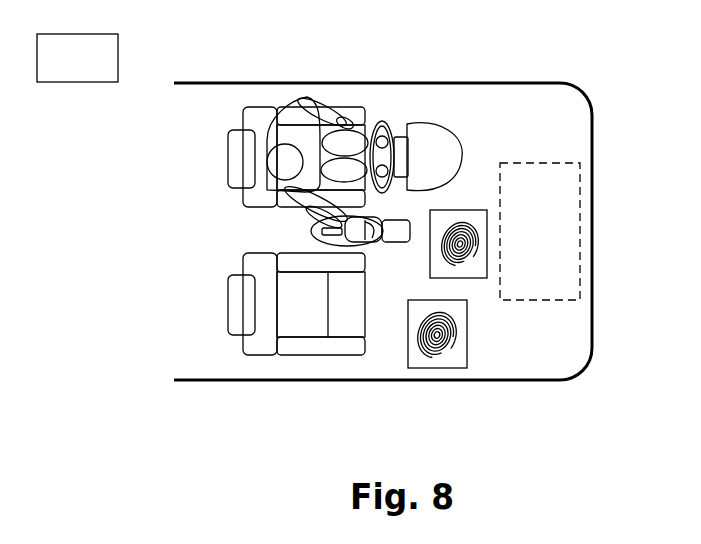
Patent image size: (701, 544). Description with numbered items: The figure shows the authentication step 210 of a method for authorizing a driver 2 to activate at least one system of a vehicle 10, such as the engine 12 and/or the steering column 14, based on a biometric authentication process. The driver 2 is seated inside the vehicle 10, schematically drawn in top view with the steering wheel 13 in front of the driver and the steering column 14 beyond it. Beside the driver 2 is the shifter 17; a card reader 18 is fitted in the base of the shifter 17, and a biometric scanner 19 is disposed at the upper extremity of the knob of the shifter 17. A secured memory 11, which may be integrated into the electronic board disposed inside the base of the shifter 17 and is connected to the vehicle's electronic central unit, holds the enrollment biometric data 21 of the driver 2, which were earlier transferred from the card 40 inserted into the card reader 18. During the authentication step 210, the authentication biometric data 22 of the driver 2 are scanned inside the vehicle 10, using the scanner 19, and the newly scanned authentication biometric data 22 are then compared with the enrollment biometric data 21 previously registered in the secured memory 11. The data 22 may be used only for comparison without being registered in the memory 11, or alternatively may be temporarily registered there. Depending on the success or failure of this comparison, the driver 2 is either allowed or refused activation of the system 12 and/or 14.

The driver 2 is at (336, 100).
The vehicle 10 is at (600, 88).
The secured memory 11 is at (407, 235).
The engine 12 is at (556, 233).
The steering wheel 13 is at (383, 120).
The steering column 14 is at (405, 125).
The shifter 17 is at (385, 248).
The card reader 18 is at (312, 230).
The biometric scanner 19 is at (377, 224).
The enrollment biometric data 21 is at (473, 217).
The authentication biometric data 22 is at (433, 368).
The card 40 is at (324, 237).
The authentication step 210 is at (98, 70).